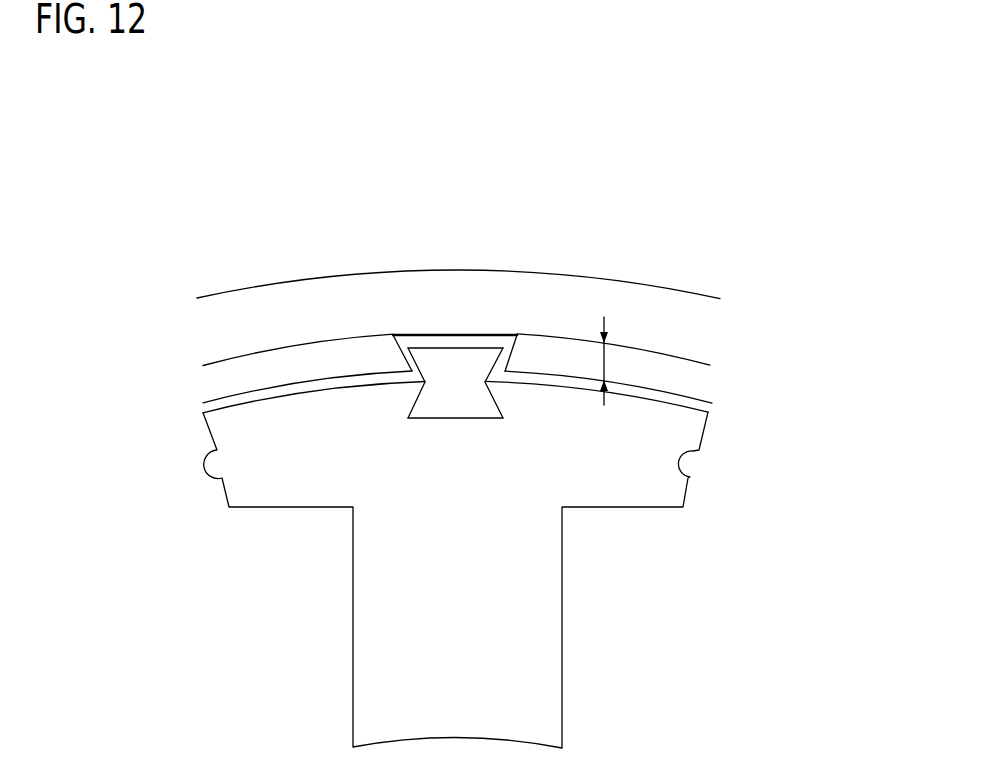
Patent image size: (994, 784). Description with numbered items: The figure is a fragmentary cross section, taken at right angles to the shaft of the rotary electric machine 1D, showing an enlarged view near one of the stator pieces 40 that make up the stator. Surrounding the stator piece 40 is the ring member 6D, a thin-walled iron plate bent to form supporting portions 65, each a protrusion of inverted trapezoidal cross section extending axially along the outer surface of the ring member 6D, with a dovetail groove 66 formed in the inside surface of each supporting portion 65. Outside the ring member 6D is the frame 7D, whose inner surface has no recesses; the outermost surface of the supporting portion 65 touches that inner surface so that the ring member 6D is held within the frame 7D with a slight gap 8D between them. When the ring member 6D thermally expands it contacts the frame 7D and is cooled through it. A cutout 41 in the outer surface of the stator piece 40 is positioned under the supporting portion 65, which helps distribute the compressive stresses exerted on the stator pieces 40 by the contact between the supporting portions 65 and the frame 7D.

The rotary electric machine 1D is at (493, 187).
The ring member 6D is at (693, 405).
The frame 7D is at (278, 300).
The gap 8D is at (606, 362).
The stator piece 40 is at (665, 487).
The cutout 41 is at (467, 418).
The supporting portion 65 is at (424, 346).
The dovetail groove 66 is at (476, 348).